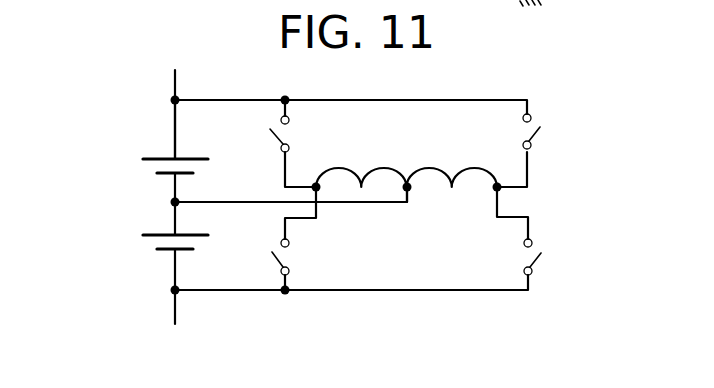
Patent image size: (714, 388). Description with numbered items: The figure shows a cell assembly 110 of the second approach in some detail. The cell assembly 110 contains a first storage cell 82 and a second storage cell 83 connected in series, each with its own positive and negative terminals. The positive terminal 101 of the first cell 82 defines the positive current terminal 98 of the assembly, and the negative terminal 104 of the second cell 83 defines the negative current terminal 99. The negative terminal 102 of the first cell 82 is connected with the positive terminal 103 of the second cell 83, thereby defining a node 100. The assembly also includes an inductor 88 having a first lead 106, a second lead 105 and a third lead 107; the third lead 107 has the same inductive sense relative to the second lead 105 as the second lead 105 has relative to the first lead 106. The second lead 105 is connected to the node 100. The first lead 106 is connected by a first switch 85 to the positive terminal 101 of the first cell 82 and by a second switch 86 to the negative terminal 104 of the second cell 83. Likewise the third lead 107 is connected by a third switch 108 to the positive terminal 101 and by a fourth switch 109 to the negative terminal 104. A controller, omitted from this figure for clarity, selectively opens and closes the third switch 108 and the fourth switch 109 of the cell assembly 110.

The cell assembly 110 is at (143, 55).
The positive current terminal 98 is at (177, 85).
The negative current terminal 99 is at (177, 305).
The positive terminal of the first cell 101 is at (173, 124).
The first storage cell 82 is at (160, 158).
The negative terminal of the first cell 102 is at (173, 190).
The node 100 is at (173, 202).
The positive terminal of the second cell 103 is at (173, 221).
The second storage cell 83 is at (165, 248).
The negative terminal of the second cell 104 is at (175, 263).
The third switch 108 is at (283, 140).
The third lead 107 is at (314, 184).
The fourth switch 109 is at (287, 258).
The inductor 88 is at (496, 168).
The second lead 105 is at (410, 190).
The first lead 106 is at (497, 180).
The first switch 85 is at (541, 137).
The second switch 86 is at (541, 258).